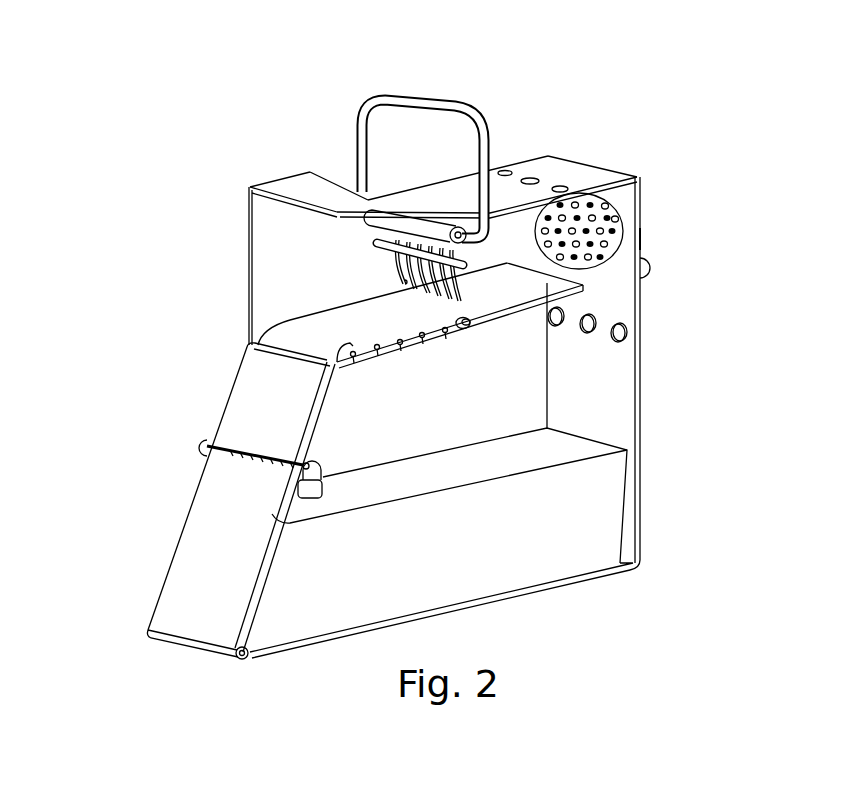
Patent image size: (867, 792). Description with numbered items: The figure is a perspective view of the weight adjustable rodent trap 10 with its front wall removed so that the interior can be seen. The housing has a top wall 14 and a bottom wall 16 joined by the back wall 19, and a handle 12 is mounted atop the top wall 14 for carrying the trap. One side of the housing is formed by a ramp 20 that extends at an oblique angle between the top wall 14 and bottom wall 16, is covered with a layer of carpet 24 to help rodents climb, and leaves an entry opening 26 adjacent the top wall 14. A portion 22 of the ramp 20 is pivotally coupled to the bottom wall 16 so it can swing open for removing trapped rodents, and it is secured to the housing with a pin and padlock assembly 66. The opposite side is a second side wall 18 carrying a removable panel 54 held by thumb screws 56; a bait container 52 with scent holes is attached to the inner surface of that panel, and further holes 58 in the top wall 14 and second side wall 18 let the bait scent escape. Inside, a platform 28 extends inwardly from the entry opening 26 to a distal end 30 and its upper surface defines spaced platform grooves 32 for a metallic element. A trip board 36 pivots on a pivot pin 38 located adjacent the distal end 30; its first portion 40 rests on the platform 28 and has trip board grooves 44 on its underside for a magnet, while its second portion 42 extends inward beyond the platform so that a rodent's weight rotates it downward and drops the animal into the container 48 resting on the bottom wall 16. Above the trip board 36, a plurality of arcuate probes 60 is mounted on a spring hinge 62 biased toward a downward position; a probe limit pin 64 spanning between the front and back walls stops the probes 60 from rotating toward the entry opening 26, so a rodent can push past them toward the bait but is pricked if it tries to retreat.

The rodent trap 10 is at (188, 107).
The handle 12 is at (412, 97).
The top wall 14 is at (568, 174).
The bottom wall 16 is at (258, 651).
The second side wall 18 is at (607, 409).
The back wall 19 is at (270, 260).
The ramp 20 is at (194, 414).
The movable ramp portion 22 is at (146, 556).
The layer of carpet 24 is at (174, 618).
The entry opening 26 is at (260, 212).
The platform 28 is at (407, 352).
The distal end 30 is at (457, 345).
The platform grooves 32 is at (378, 358).
The trip board 36 is at (297, 301).
The pivot pin 38 is at (468, 326).
The first portion 40 is at (398, 317).
The second portion 42 is at (517, 295).
The trip board grooves 44 is at (351, 338).
The container 48 is at (555, 556).
The bait container 52 is at (598, 210).
The removable panel 54 is at (641, 240).
The thumb screws 56 is at (653, 268).
The holes 58 is at (505, 170).
The probes 60 is at (398, 274).
The spring hinge 62 is at (374, 212).
The probe limit pin 64 is at (374, 247).
The pin and padlock assembly 66 is at (331, 490).